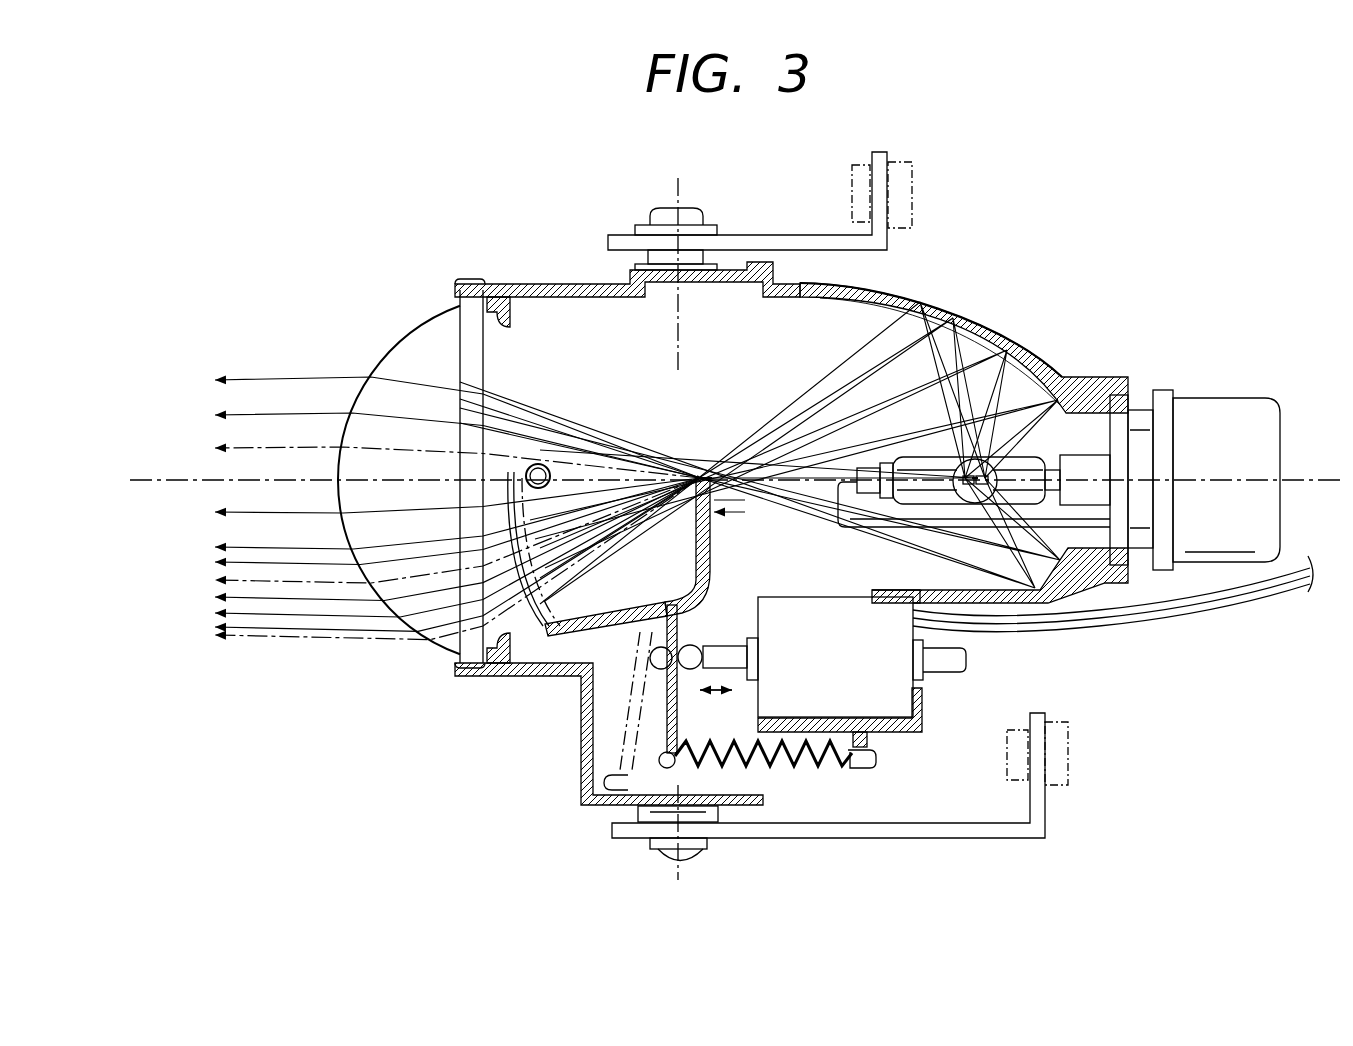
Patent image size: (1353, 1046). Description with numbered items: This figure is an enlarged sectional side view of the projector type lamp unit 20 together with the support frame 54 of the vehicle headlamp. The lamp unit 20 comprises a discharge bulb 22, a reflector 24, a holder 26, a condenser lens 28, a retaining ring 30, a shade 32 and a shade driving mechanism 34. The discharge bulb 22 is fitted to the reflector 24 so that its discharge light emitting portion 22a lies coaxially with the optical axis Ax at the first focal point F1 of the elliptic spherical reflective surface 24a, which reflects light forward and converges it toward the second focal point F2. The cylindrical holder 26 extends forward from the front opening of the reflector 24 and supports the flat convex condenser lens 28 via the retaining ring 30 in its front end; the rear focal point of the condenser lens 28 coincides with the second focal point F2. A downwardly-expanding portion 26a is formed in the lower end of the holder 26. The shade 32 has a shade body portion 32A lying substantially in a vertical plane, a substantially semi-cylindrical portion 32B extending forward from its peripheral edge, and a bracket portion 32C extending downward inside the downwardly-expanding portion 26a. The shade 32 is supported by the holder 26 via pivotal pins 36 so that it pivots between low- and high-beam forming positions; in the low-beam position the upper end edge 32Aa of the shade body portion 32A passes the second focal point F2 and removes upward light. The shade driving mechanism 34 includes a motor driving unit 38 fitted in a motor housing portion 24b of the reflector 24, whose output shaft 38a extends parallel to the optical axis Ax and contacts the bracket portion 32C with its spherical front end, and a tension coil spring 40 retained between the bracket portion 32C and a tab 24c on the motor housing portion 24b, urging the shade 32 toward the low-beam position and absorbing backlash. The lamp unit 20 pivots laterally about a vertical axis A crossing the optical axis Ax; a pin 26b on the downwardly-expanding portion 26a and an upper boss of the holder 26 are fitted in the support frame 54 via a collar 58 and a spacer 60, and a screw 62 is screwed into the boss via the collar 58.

The lamp unit 20 is at (447, 222).
The discharge bulb 22 is at (923, 452).
The discharge light emitting portion 22a is at (968, 487).
The reflector 24 is at (1012, 326).
The reflective surface 24a is at (952, 320).
The motor housing portion 24b is at (922, 700).
The tab 24c is at (870, 740).
The holder 26 is at (548, 282).
The downwardly-expanding portion 26a is at (580, 712).
The pin 26b is at (698, 855).
The condenser lens 28 is at (388, 343).
The retaining ring 30 is at (452, 291).
The shade 32 is at (714, 525).
The shade body portion 32A is at (617, 447).
The upper end edge 32Aa is at (662, 466).
The substantially semi-cylindrical portion 32B is at (618, 610).
The bracket portion 32C is at (667, 712).
The shade driving mechanism 34 is at (828, 773).
The pivotal pin 36 is at (535, 462).
The motor driving unit 38 is at (848, 600).
The output shaft 38a is at (720, 650).
The tension coil spring 40 is at (780, 755).
The support frame 54 is at (758, 234).
The collar 58 is at (640, 225).
The spacer 60 is at (637, 265).
The screw 62 is at (668, 210).
The vertical axis A is at (668, 340).
The optical axis Ax is at (148, 482).
The first focal point F1 is at (966, 476).
The second focal point F2 is at (713, 455).